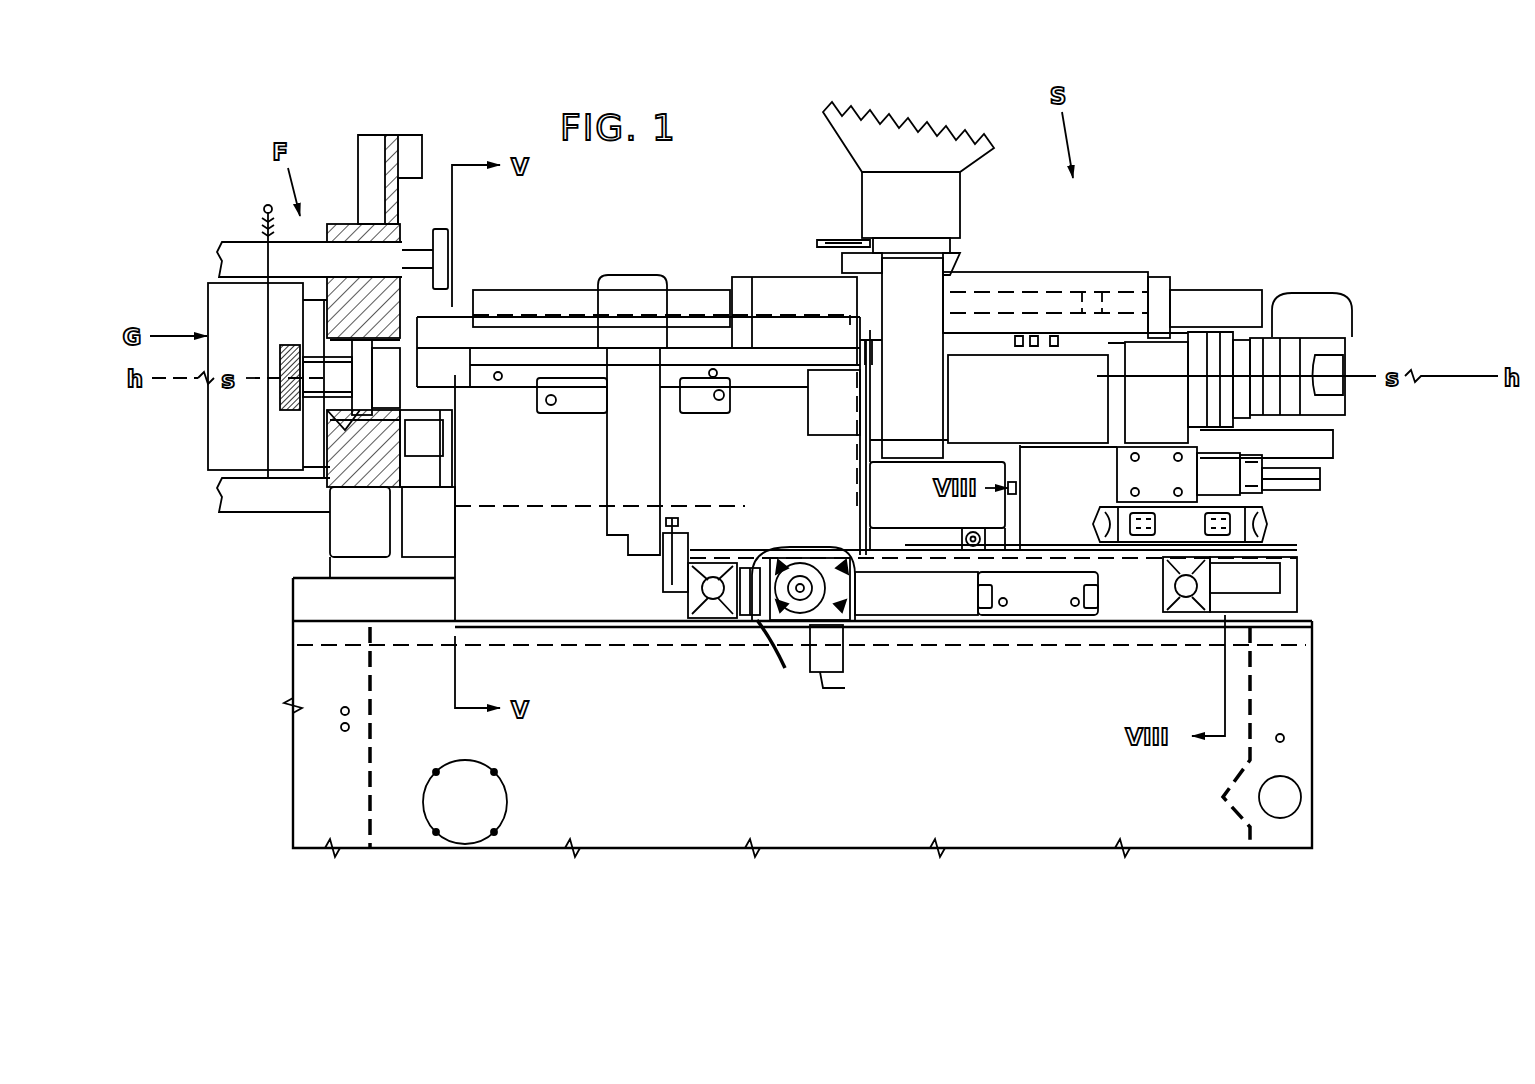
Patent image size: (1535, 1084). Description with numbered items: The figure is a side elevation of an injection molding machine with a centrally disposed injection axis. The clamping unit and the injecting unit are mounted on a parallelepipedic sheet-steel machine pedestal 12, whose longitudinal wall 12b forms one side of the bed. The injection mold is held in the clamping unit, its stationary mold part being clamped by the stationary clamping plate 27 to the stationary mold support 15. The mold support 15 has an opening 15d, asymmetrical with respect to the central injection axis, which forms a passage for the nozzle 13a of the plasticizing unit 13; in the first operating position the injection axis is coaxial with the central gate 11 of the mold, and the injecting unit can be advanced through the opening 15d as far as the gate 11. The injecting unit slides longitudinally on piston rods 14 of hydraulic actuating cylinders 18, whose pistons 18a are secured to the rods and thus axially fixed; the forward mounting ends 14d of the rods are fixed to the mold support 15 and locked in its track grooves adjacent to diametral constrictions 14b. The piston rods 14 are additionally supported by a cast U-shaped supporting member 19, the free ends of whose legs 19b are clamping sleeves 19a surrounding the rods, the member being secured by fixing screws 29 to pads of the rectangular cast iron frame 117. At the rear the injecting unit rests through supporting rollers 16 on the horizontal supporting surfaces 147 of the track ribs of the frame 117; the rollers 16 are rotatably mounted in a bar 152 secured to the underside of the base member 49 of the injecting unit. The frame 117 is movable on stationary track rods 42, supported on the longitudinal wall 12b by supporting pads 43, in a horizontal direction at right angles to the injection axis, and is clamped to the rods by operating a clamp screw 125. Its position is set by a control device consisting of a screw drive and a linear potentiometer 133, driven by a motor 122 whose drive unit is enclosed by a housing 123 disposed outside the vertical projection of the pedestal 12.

The central gate 11 is at (292, 380).
The machine pedestal 12 is at (1320, 706).
The longitudinal wall 12b is at (822, 770).
The plasticizing unit 13 is at (562, 458).
The nozzle 13a is at (305, 432).
The piston rods 14 is at (706, 302).
The diametral constrictions 14b is at (425, 458).
The mounting ends 14d is at (320, 490).
The stationary mold support 15 is at (345, 220).
The opening 15d is at (322, 346).
The supporting rollers 16 is at (985, 548).
The hydraulic actuating cylinders 18 is at (1098, 320).
The pistons 18a is at (1120, 318).
The U-shaped supporting member 19 is at (612, 270).
The clamping sleeves 19a is at (636, 300).
The legs 19b is at (622, 452).
The stationary clamping plate 27 is at (302, 462).
The fixing screws 29 is at (672, 532).
The track rods 42 is at (712, 592).
The supporting pads 43 is at (700, 612).
The base member 49 is at (920, 300).
The cast iron frame 117 is at (1292, 578).
The motor 122 is at (832, 650).
The housing 123 is at (800, 545).
The clamp screw 125 is at (725, 600).
The linear potentiometer 133 is at (757, 628).
The horizontal supporting surfaces 147 is at (1265, 545).
The bar 152 is at (990, 540).